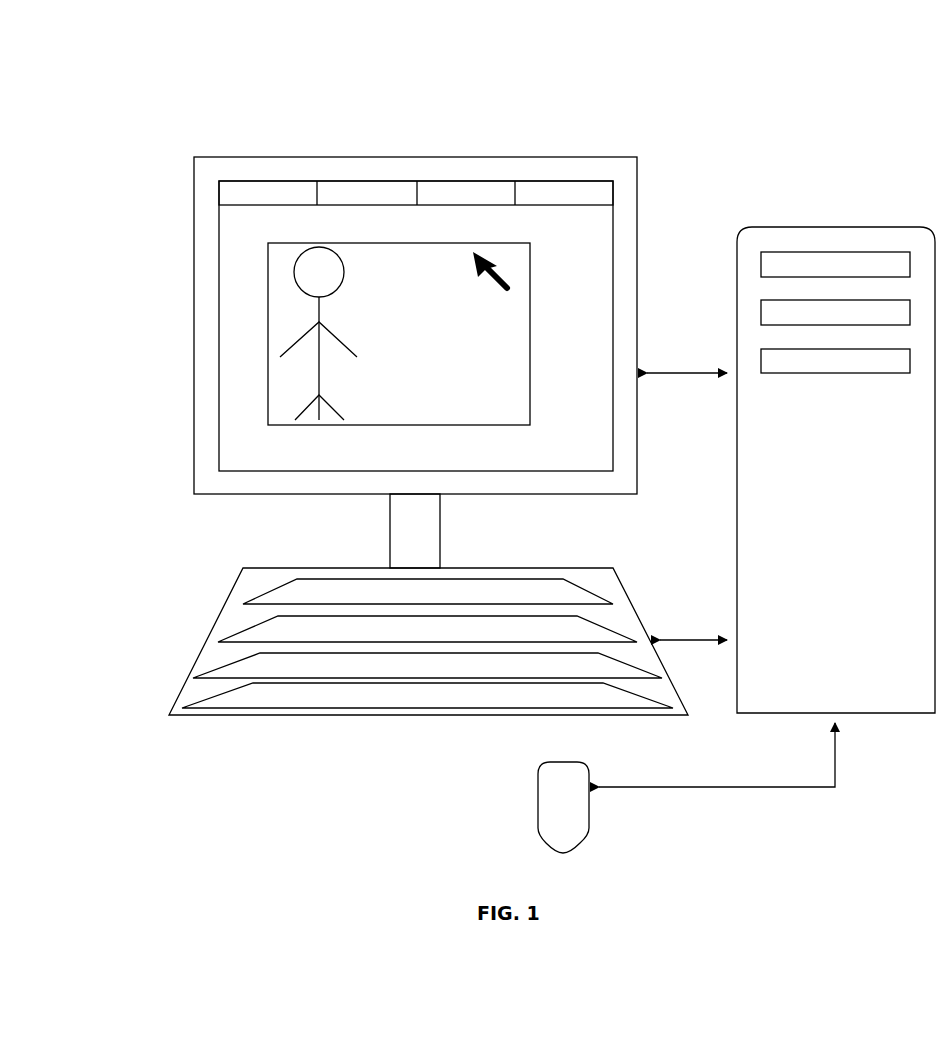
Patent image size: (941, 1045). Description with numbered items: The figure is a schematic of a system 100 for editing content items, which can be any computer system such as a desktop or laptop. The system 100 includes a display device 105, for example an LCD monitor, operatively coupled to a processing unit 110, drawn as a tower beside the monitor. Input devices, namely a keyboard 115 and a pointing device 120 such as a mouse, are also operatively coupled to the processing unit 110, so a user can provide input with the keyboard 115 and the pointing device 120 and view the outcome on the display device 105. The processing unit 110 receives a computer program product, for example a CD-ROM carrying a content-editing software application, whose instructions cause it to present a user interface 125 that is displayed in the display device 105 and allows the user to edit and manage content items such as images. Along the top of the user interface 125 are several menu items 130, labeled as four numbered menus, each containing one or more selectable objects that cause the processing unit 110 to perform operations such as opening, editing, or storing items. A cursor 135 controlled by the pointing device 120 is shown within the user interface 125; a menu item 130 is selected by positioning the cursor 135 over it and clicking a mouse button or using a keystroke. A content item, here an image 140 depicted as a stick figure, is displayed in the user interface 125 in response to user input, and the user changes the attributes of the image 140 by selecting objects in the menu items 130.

The system 100 is at (707, 110).
The display device 105 is at (194, 221).
The processing unit 110 is at (836, 470).
The keyboard 115 is at (206, 640).
The pointing device 120 is at (538, 800).
The user interface 125 is at (219, 286).
The menu items 130 is at (567, 181).
The cursor 135 is at (626, 240).
The image 140 is at (268, 351).